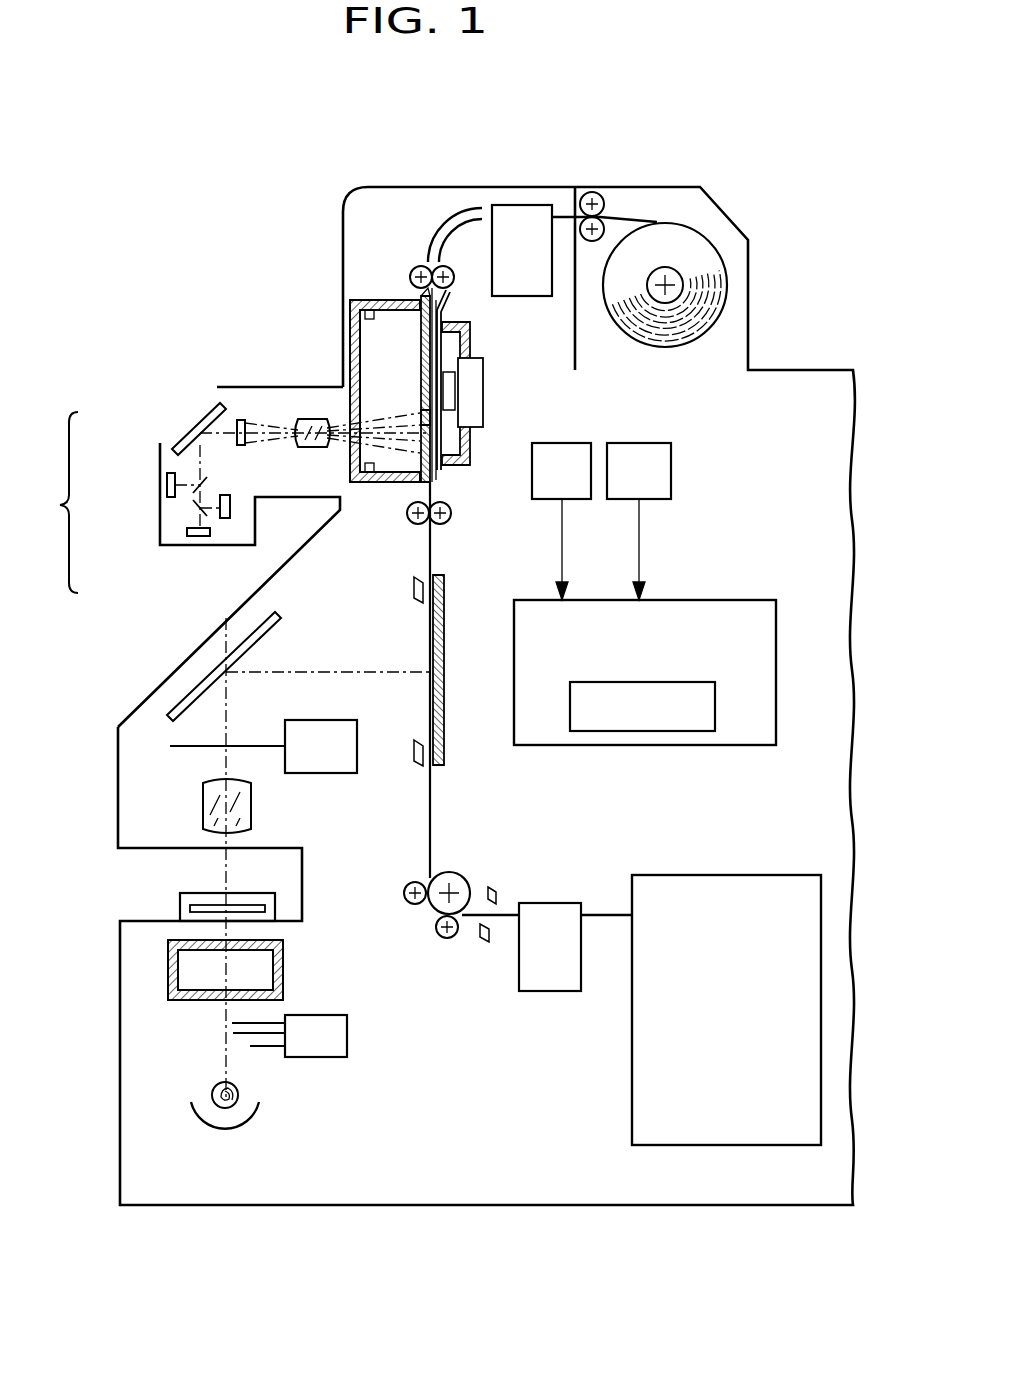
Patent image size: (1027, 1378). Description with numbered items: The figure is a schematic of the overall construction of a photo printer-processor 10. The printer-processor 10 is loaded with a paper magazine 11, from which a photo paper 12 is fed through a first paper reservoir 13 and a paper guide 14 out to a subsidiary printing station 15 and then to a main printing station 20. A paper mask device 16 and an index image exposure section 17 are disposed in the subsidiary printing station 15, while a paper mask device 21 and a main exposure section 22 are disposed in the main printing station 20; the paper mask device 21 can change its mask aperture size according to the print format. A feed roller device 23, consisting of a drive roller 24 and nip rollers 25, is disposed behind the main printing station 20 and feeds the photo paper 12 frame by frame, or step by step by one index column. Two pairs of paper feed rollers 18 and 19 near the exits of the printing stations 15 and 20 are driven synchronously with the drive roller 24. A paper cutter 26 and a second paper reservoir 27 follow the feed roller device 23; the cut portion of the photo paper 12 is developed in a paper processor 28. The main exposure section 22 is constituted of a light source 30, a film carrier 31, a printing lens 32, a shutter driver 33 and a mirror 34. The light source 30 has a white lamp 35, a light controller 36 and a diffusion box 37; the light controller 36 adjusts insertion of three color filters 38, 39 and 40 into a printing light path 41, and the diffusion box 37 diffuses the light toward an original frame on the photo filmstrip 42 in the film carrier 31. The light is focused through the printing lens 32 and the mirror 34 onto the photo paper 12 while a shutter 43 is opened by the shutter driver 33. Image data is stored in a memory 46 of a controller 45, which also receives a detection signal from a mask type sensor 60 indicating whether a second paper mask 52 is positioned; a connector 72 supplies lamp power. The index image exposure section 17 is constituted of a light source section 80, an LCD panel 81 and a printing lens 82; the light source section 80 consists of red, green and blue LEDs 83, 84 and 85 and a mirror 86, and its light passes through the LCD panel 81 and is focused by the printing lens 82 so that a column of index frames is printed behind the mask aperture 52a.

The printer-processor 10 is at (411, 176).
The paper magazine 11 is at (696, 200).
The photo paper 12 is at (637, 215).
The first paper reservoir 13 is at (537, 268).
The paper guide 14 is at (437, 240).
The subsidiary printing station 15 is at (386, 285).
The paper mask device 16 is at (375, 384).
The index image exposure section 17 is at (178, 400).
The paper feed rollers 18 is at (447, 287).
The paper feed rollers 19 is at (452, 514).
The main printing station 20 is at (371, 680).
The paper mask device 21 is at (416, 587).
The main exposure section 22 is at (170, 640).
The feed roller device 23 is at (463, 862).
The drive roller 24 is at (462, 880).
The nip rollers 25 is at (436, 928).
The paper cutter 26 is at (496, 890).
The second paper reservoir 27 is at (534, 965).
The paper processor 28 is at (727, 875).
The light source 30 is at (251, 1068).
The film carrier 31 is at (183, 886).
The printing lens 32 is at (252, 805).
The shutter driver 33 is at (305, 765).
The mirror 34 is at (284, 620).
The white lamp 35 is at (212, 1104).
The light controller 36 is at (301, 1053).
The diffusion box 37 is at (284, 968).
The color filter 38 is at (232, 1023).
The color filter 39 is at (234, 1034).
The color filter 40 is at (267, 1047).
The printing light path 41 is at (225, 1013).
The photo filmstrip 42 is at (210, 905).
The shutter 43 is at (256, 746).
The controller 45 is at (645, 668).
The memory 46 is at (640, 745).
The second paper mask 52 is at (400, 362).
The mask aperture 52a is at (422, 424).
The mask type sensor 60 is at (546, 487).
The connector 72 is at (623, 487).
The light source section 80 is at (225, 472).
The LCD panel 81 is at (241, 418).
The printing lens 82 is at (310, 448).
The red LED 83 is at (167, 487).
The green LED 84 is at (187, 532).
The blue LED 85 is at (224, 520).
The mirror 86 is at (174, 447).